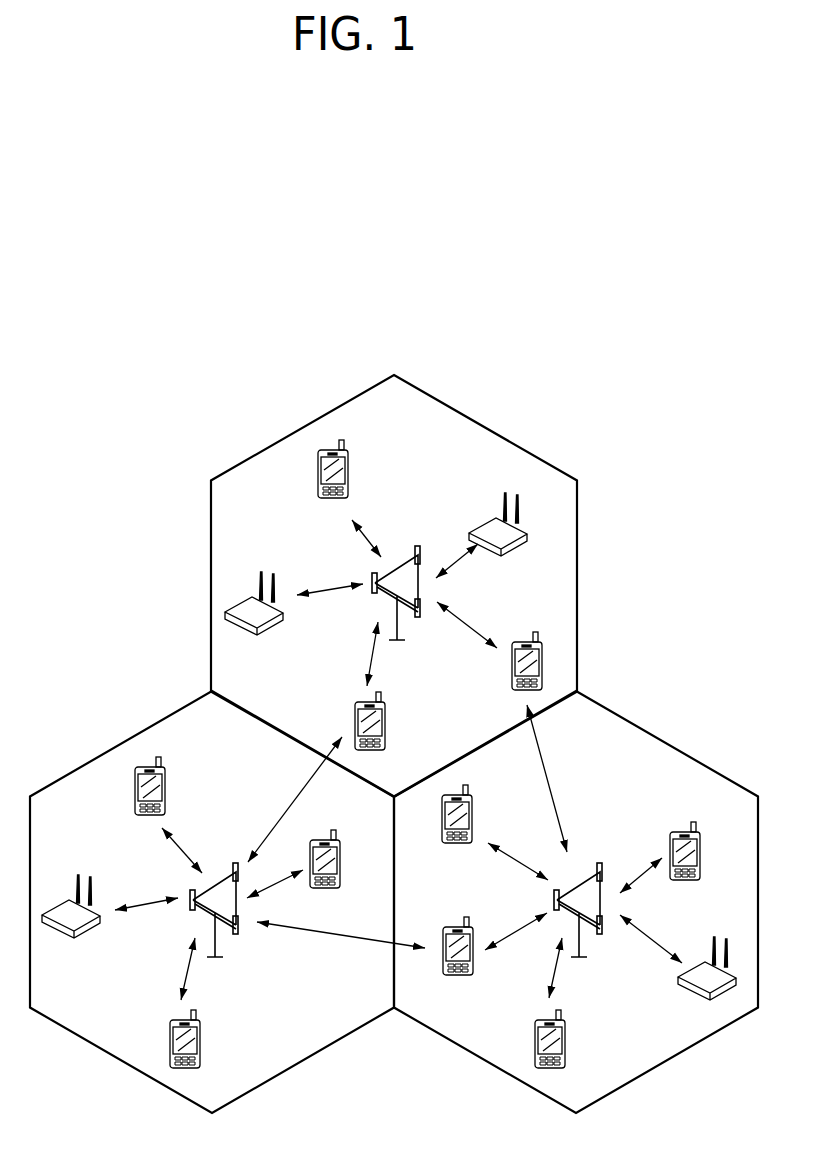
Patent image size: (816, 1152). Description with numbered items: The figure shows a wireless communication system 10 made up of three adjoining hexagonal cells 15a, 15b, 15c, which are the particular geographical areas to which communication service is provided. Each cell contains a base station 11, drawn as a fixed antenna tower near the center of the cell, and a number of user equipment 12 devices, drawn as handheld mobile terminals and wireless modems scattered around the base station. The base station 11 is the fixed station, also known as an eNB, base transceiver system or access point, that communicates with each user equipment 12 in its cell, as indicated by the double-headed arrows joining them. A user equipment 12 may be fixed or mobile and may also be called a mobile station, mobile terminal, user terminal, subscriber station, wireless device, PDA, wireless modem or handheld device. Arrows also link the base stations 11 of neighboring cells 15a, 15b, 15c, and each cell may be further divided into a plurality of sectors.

The wireless communication system 10 is at (394, 744).
The base station 11 is at (410, 555).
The user equipment 12 is at (349, 473).
The cell 15a is at (577, 573).
The cell 15b is at (692, 757).
The cell 15c is at (97, 756).